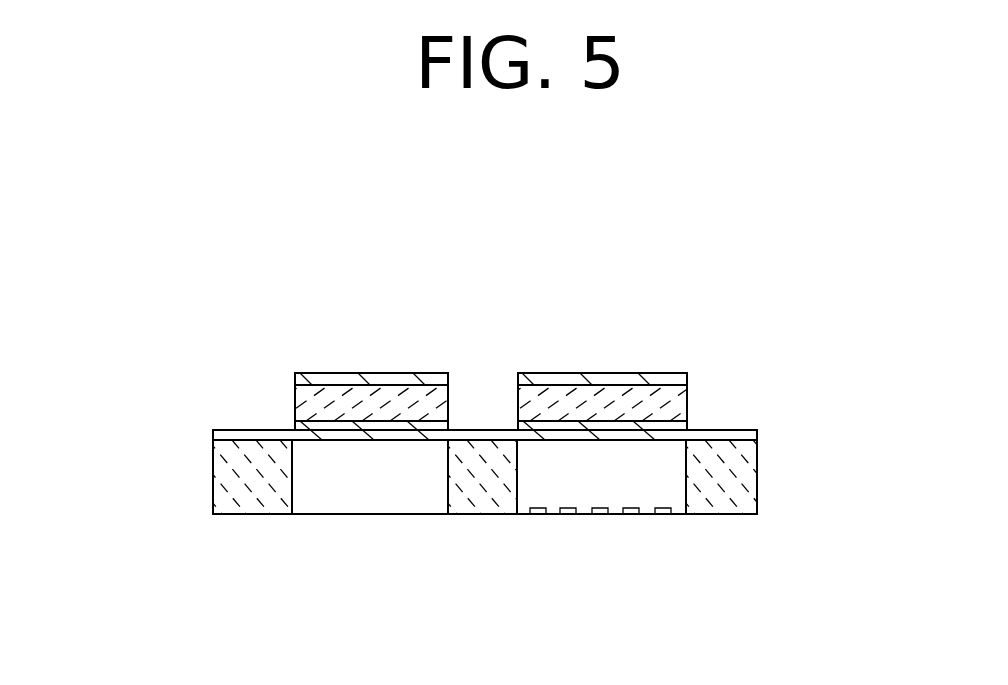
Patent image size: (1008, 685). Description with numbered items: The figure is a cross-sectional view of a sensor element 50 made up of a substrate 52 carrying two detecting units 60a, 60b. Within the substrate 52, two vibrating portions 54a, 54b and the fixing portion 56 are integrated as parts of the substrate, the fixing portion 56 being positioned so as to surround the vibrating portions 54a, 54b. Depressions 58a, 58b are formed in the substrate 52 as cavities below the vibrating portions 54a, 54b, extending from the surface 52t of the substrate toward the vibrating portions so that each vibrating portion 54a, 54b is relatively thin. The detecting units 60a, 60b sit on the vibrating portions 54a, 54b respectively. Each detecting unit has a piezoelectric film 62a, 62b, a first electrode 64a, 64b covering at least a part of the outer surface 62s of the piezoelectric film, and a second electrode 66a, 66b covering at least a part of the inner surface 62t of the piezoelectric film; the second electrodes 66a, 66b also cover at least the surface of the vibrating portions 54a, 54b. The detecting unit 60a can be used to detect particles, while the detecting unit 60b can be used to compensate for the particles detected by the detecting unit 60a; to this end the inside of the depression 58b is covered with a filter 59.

The sensor element 50 is at (453, 437).
The substrate 52 is at (272, 497).
The surface of the substrate 52t is at (223, 517).
The vibrating portion 54a is at (335, 437).
The vibrating portion 54b is at (683, 413).
The fixing portion 56 is at (240, 465).
The depression 58a is at (393, 490).
The depression 58b is at (560, 480).
The filter 59 is at (635, 517).
The detecting unit 60a is at (342, 350).
The detecting unit 60b is at (674, 385).
The piezoelectric film 62a is at (298, 392).
The piezoelectric film 62b is at (650, 400).
The outer surface of the piezoelectric film 62s is at (688, 372).
The inner surface of the piezoelectric film 62t is at (688, 411).
The first electrode 64a is at (315, 372).
The first electrode 64b is at (673, 373).
The second electrode 66a is at (298, 423).
The second electrode 66b is at (688, 438).